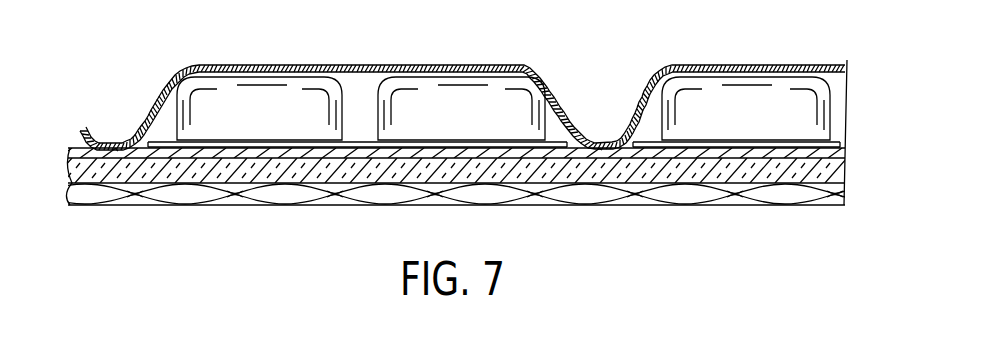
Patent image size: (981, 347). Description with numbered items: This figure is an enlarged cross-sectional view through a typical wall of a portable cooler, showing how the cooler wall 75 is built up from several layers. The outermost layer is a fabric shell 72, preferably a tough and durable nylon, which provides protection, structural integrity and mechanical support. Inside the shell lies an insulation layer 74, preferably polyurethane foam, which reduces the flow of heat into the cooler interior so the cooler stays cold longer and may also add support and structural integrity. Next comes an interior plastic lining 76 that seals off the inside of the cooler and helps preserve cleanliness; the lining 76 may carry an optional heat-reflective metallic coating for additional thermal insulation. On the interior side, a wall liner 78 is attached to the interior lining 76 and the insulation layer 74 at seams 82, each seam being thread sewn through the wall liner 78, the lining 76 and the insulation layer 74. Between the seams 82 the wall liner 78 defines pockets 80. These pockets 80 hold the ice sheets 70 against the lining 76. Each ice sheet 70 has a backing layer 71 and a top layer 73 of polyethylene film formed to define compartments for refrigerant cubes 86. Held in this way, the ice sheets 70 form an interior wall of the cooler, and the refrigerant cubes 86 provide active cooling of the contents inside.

The ice sheets 70 is at (232, 92).
The backing layer 71 is at (165, 90).
The fabric shell 72 is at (68, 195).
The top layer 73 is at (188, 65).
The insulation layer 74 is at (643, 177).
The cooler wall 75 is at (292, 261).
The interior plastic lining 76 is at (68, 152).
The wall liner 78 is at (458, 65).
The pockets 80 is at (356, 88).
The seams 82 is at (118, 150).
The refrigerant cubes 86 is at (270, 129).